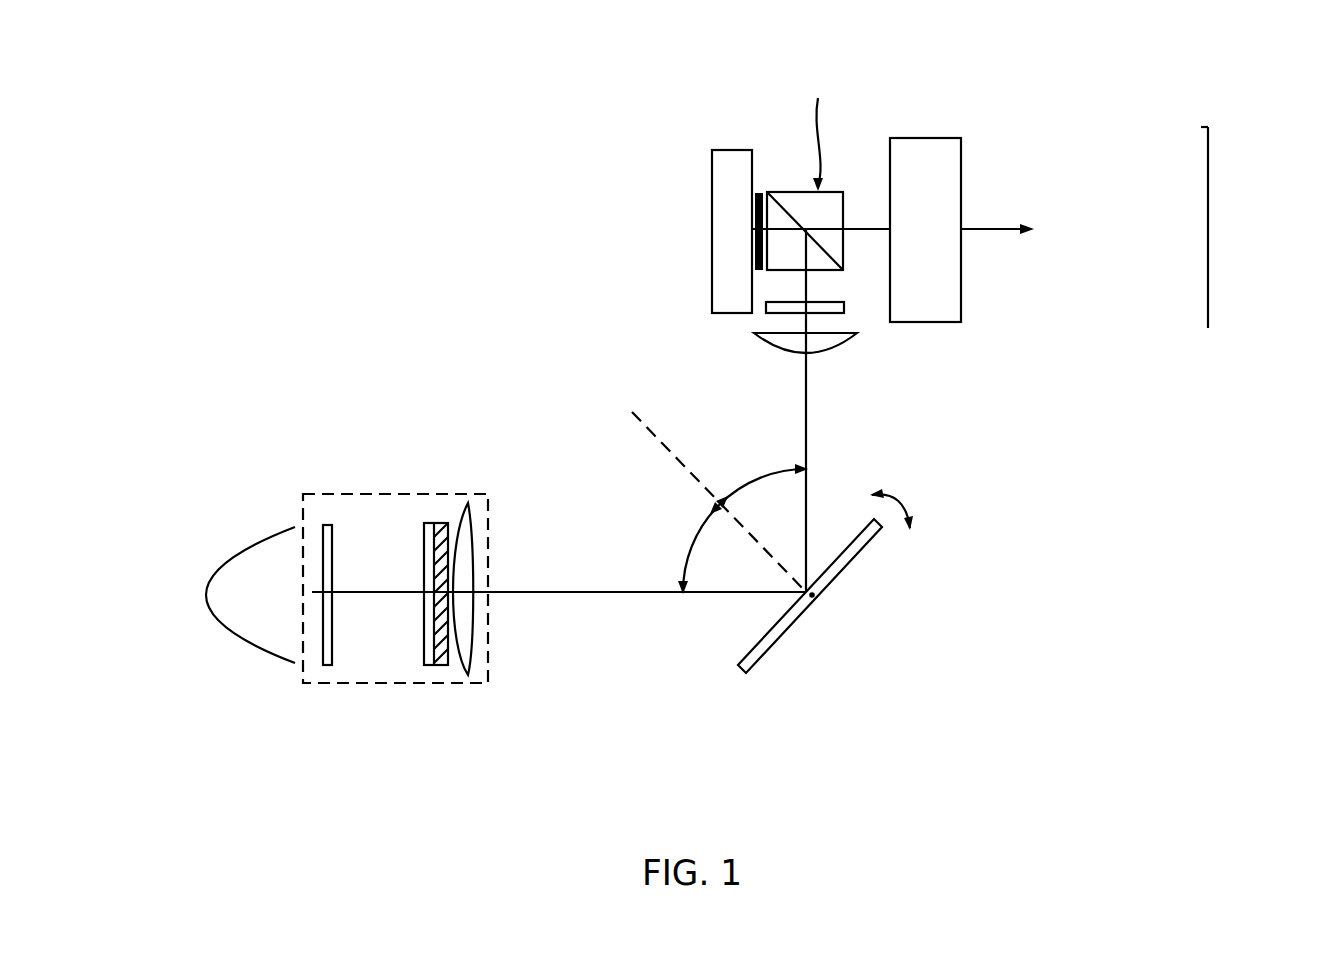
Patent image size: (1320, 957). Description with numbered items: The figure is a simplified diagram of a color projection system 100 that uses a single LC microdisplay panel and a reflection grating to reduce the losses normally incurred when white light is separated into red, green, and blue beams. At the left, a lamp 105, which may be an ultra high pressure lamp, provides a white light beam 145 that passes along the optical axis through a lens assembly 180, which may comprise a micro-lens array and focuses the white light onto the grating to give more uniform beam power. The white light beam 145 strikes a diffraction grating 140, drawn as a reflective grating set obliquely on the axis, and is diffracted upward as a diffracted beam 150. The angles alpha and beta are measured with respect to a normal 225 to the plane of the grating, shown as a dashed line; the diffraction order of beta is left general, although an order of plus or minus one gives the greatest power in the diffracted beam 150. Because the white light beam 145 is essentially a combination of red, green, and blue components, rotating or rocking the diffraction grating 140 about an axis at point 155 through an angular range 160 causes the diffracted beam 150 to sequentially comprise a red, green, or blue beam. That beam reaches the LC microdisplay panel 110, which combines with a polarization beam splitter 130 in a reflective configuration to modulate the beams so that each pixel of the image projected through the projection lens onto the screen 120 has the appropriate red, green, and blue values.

The color projection system 100 is at (540, 118).
The lamp 105 is at (210, 618).
The LC microdisplay panel 110 is at (738, 150).
The screen 120 is at (1210, 165).
The polarization beam splitter 130 is at (852, 70).
The diffraction grating 140 is at (872, 545).
The white light beam 145 is at (615, 592).
The diffracted beam 150 is at (808, 400).
The point 155 is at (815, 597).
The angular range 160 is at (905, 502).
The lens assembly 180 is at (490, 660).
The normal 225 is at (653, 435).